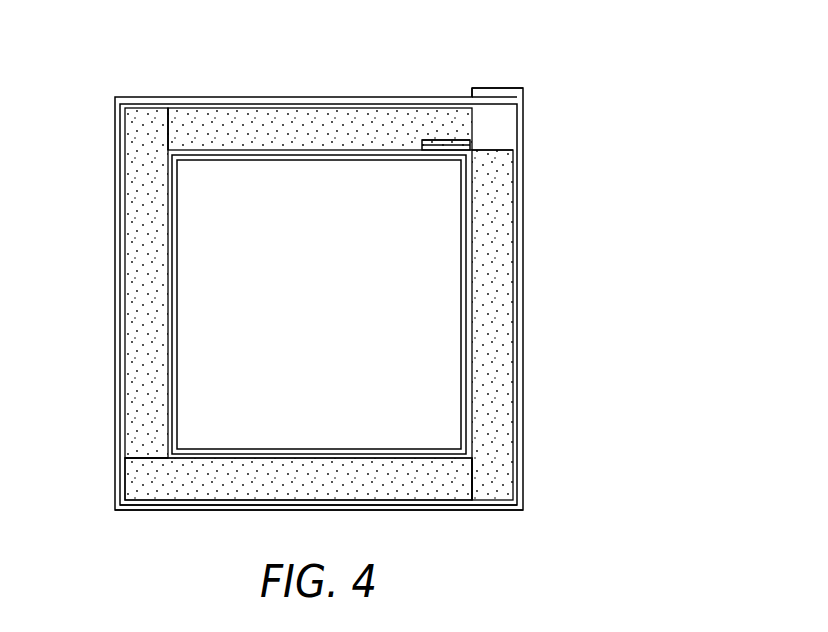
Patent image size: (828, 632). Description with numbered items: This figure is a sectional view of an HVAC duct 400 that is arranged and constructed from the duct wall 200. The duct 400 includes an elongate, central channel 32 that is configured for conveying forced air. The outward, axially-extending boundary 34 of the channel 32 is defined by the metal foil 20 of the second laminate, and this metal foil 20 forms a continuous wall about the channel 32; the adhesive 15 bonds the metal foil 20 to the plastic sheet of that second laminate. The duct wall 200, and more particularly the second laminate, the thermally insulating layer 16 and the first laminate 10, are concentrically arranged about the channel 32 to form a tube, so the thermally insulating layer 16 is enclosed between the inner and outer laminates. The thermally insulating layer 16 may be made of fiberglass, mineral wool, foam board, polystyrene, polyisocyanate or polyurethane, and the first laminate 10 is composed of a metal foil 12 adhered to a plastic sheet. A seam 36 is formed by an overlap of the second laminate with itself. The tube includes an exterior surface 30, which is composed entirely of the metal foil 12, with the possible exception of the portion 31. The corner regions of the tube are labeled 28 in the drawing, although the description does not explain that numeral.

The first laminate 10 is at (321, 303).
The metal foil 12 is at (523, 283).
The adhesive 15 is at (418, 138).
The thermally insulating layer 16 is at (310, 135).
The metal foil 20 is at (370, 442).
The corner joint 28 is at (172, 130).
The exterior surface 30 is at (232, 98).
The portion 31 is at (470, 95).
The central channel 32 is at (338, 320).
The boundary 34 is at (319, 304).
The seam 36 is at (497, 88).
The duct wall 200 is at (523, 510).
The HVAC duct 400 is at (377, 307).